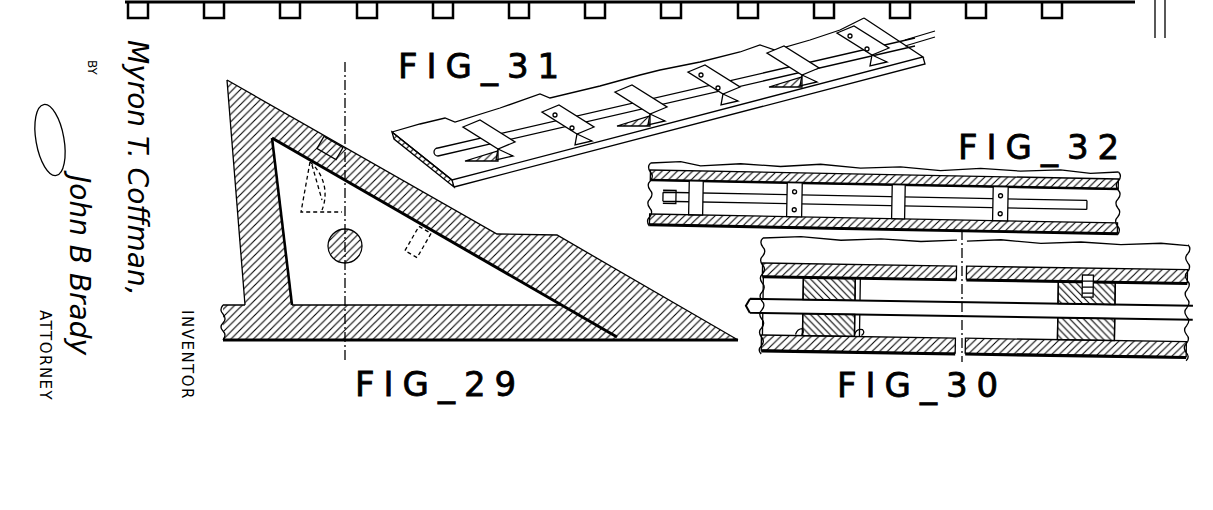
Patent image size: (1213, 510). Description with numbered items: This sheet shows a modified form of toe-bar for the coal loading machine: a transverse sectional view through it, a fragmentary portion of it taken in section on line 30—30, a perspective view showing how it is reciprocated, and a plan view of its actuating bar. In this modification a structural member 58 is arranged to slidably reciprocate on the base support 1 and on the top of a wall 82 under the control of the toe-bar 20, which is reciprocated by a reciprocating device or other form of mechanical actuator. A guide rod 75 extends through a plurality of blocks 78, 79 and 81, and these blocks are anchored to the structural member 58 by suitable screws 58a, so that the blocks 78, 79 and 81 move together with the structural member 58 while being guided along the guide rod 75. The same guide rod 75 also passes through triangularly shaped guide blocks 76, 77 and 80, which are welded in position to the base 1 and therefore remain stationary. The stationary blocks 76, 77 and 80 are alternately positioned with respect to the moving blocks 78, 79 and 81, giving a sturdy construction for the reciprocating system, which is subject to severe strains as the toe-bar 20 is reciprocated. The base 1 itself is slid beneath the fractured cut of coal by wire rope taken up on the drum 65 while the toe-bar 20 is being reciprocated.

In FIG. 29, the base support 1 is at (552, 325).
In FIG. 31, the base support 1 is at (697, 113).
In FIG. 32, the base support 1 is at (883, 199).
In FIG. 29, the toe-bar 20 is at (264, 98).
In FIG. 31, the toe-bar 20 is at (1113, 5).
In FIG. 32, the toe-bar 20 is at (884, 175).
In FIG. 30, the toe-bar 20 is at (1118, 253).
In FIG. 29, the section line 30— 30 is at (367, 82).
In FIG. 29, the structural member 58 is at (373, 167).
In FIG. 30, the structural member 58 is at (778, 251).
In FIG. 29, the screws 58a is at (433, 262).
In FIG. 30, the screws 58a is at (1082, 283).
In FIG. 29, the drum 65 is at (607, 242).
In FIG. 29, the guide rod 75 is at (362, 254).
In FIG. 31, the guide rod 75 is at (920, 42).
In FIG. 32, the guide rod 75 is at (1087, 206).
In FIG. 30, the guide rod 75 is at (883, 309).
In FIG. 31, the triangularly shaped guide block 76 is at (472, 125).
In FIG. 32, the triangularly shaped guide block 76 is at (707, 190).
In FIG. 31, the triangularly shaped guide block 77 is at (640, 88).
In FIG. 32, the triangularly shaped guide block 77 is at (897, 183).
In FIG. 30, the triangularly shaped guide block 77 is at (832, 323).
In FIG. 31, the block 78 is at (560, 130).
In FIG. 32, the block 78 is at (787, 202).
In FIG. 29, the block 79 is at (442, 292).
In FIG. 31, the block 79 is at (710, 75).
In FIG. 32, the block 79 is at (997, 202).
In FIG. 30, the block 79 is at (1100, 333).
In FIG. 31, the triangularly shaped guide block 80 is at (786, 99).
In FIG. 31, the block 81 is at (865, 62).
In FIG. 29, the wall 82 is at (240, 178).